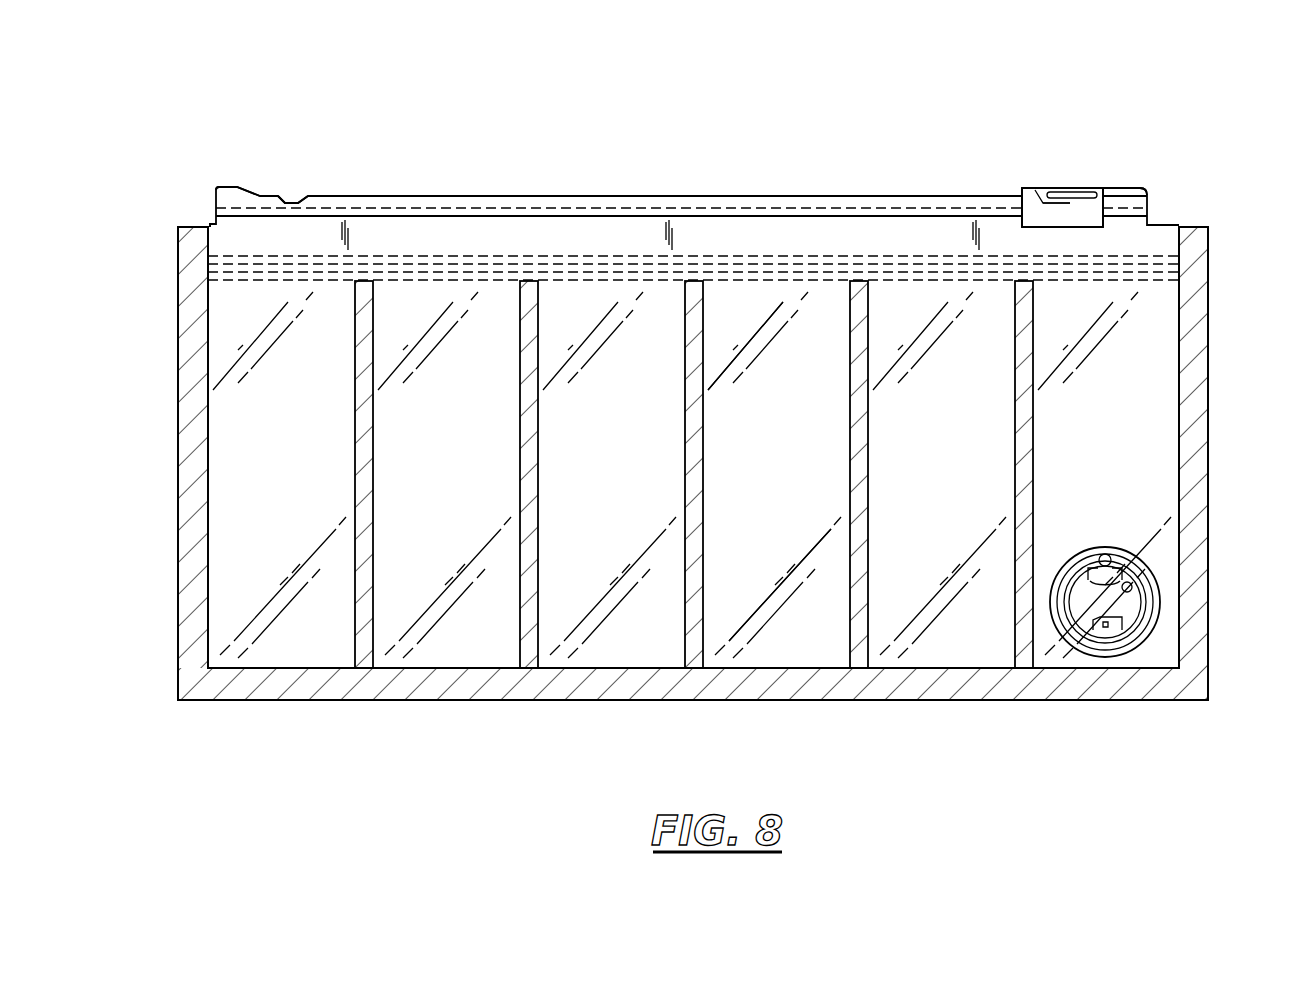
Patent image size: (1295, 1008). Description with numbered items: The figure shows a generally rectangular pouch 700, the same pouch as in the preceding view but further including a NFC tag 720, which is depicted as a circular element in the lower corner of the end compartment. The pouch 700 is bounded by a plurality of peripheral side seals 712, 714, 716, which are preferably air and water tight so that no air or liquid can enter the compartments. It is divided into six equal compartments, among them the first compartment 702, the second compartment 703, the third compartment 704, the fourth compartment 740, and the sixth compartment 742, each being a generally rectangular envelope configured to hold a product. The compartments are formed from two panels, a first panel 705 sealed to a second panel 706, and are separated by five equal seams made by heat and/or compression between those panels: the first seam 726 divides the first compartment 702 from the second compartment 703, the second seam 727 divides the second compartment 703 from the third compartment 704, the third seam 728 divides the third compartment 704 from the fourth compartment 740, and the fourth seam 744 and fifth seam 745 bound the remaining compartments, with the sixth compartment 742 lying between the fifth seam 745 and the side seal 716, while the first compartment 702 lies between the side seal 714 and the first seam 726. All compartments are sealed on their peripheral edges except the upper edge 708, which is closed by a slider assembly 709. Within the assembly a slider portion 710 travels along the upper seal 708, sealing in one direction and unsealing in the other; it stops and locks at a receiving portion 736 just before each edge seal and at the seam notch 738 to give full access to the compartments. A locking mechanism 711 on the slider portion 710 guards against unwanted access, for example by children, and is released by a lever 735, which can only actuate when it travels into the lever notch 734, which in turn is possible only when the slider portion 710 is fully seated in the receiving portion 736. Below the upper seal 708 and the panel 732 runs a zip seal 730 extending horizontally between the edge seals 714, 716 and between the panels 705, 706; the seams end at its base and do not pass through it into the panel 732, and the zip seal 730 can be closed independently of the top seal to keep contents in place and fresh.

The pouch 700 is at (163, 138).
The first compartment 702 is at (1163, 652).
The second compartment 703 is at (968, 652).
The third compartment 704 is at (770, 652).
The first panel 705 is at (803, 460).
The second panel 706 is at (1213, 371).
The upper edge 708 is at (912, 197).
The slider assembly 709 is at (1120, 112).
The slider portion 710 is at (1030, 200).
The locking mechanism 711 is at (1063, 202).
The peripheral side seal 712 is at (904, 690).
The side seal 714 is at (1186, 415).
The side seal 716 is at (204, 415).
The port fitting 720 is at (1115, 610).
The first seam 726 is at (1025, 650).
The second seam 727 is at (859, 650).
The third seam 728 is at (695, 650).
The zip seal 730 is at (693, 262).
The panel 732 is at (627, 232).
The lever notch 734 is at (290, 202).
The lever 735 is at (1070, 192).
The receiving portion 736 is at (230, 195).
The seam notch 738 is at (213, 224).
The fourth compartment 740 is at (438, 652).
The sixth compartment 742 is at (272, 650).
The fourth seam 744 is at (529, 650).
The fifth seam 745 is at (364, 650).